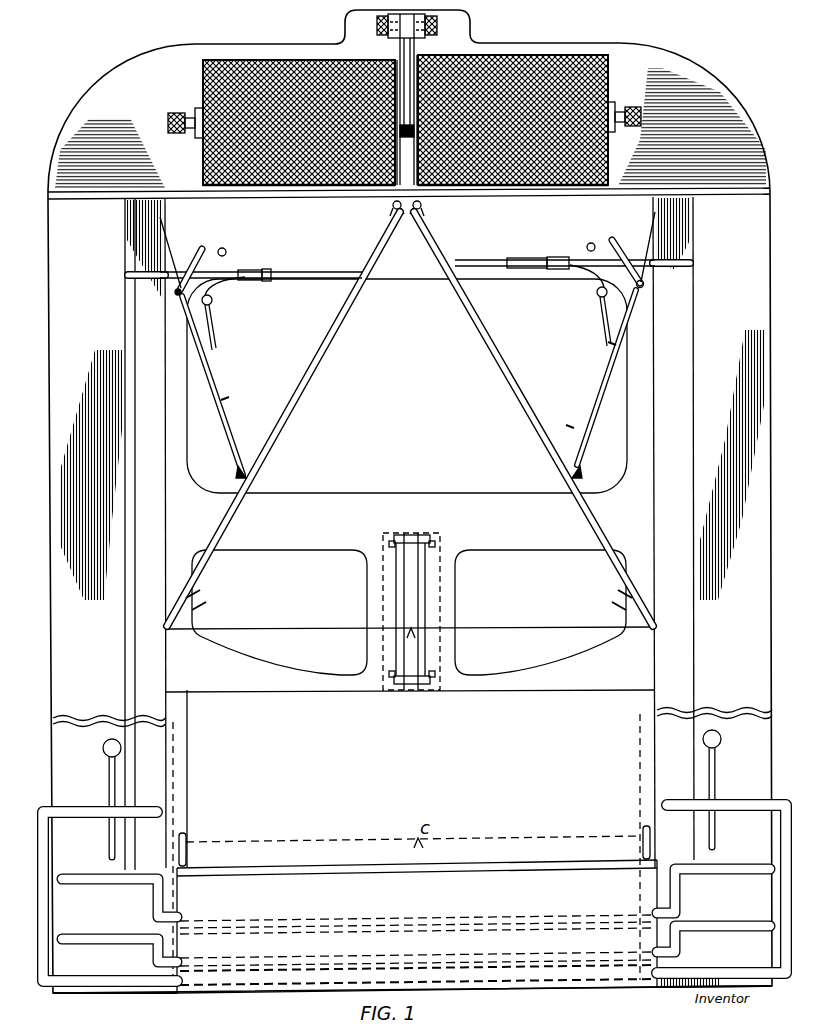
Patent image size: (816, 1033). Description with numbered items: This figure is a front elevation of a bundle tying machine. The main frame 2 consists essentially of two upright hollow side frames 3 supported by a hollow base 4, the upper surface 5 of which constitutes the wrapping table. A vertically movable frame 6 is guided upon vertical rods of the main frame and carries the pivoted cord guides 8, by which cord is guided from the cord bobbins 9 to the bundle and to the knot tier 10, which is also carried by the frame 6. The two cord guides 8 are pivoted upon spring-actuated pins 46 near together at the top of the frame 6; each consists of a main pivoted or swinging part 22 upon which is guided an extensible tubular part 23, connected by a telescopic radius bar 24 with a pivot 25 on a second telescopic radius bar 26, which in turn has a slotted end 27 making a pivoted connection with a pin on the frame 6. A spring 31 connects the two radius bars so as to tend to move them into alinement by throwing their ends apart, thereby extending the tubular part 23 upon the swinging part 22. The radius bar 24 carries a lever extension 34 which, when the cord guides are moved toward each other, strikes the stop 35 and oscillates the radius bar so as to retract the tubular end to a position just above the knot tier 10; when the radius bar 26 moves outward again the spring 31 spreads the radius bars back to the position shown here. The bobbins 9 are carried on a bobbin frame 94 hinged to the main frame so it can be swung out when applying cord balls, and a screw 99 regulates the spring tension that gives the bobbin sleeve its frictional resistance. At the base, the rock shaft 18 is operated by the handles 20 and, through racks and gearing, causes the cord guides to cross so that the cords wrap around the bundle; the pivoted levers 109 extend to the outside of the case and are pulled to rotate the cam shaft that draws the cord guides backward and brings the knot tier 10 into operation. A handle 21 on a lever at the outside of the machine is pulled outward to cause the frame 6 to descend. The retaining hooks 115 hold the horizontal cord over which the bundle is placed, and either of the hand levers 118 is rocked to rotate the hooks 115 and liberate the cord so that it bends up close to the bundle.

The main frame 2 is at (400, 501).
The side frames 3 is at (412, 465).
The base 4 is at (417, 926).
The wrapping table 5 is at (417, 860).
The vertically movable frame 6 is at (410, 600).
The cord guides 8 is at (407, 386).
The cord bobbins 9 is at (225, 85).
The knot tier 10 is at (407, 611).
The rock shaft 18 is at (163, 986).
The handles 20 is at (414, 878).
The handle 21 is at (416, 946).
The swinging part 22 is at (410, 419).
The extensible tubular part 23 is at (409, 559).
The telescopic radius bar 24 is at (409, 384).
The pivot 25 is at (644, 286).
The second telescopic radius bar 26 is at (407, 260).
The slotted end 27 is at (126, 276).
The spring 31 is at (406, 307).
The lever extension 34 is at (196, 250).
The stop 35 is at (406, 242).
The pivot pins 46 is at (393, 205).
The bobbin frame 94 is at (412, 49).
The screw 99 is at (168, 123).
The pivoted levers 109 is at (690, 894).
The retaining hooks 115 is at (188, 836).
The hand levers 118 is at (413, 793).